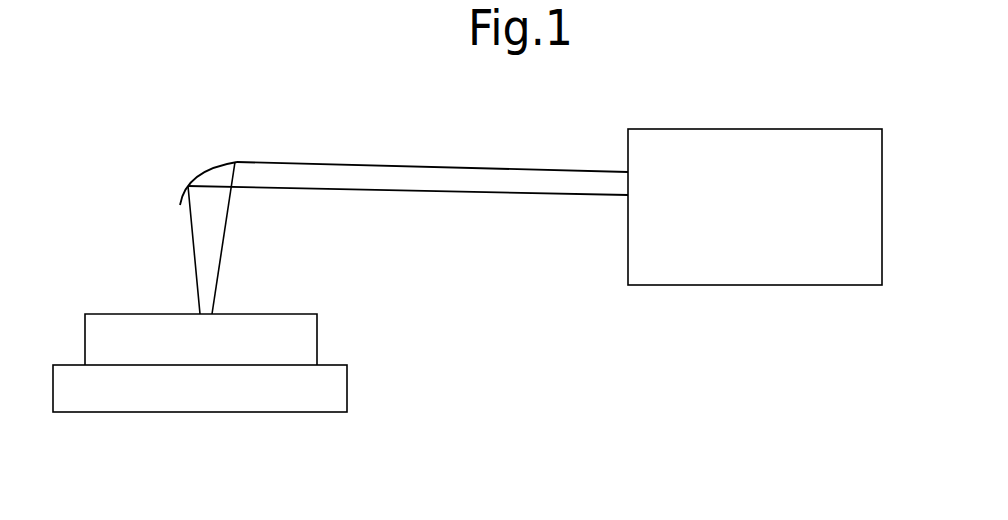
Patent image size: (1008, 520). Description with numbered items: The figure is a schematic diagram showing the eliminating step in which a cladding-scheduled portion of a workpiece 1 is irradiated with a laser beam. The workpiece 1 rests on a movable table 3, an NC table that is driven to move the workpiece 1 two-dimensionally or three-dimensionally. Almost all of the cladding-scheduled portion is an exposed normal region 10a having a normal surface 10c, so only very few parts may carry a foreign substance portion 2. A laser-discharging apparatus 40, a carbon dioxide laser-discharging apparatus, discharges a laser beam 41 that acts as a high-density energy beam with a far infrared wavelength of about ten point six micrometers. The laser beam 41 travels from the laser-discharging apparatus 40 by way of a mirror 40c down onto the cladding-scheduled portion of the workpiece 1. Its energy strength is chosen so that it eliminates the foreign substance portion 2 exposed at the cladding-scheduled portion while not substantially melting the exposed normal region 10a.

The workpiece 1 is at (302, 328).
The foreign substance portion 2 is at (177, 317).
The movable table 3 is at (333, 393).
The exposed normal region 10a is at (232, 312).
The normal surface 10c is at (267, 312).
The laser-discharging apparatus 40 is at (752, 283).
The mirror 40c is at (211, 162).
The laser beam 41 is at (424, 177).